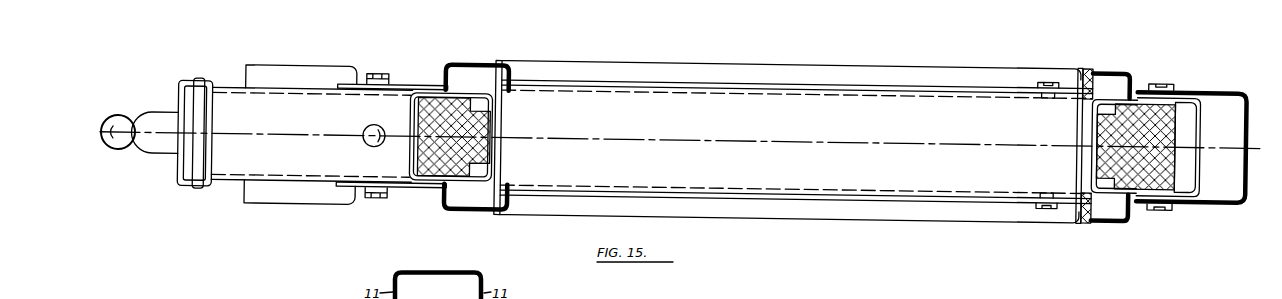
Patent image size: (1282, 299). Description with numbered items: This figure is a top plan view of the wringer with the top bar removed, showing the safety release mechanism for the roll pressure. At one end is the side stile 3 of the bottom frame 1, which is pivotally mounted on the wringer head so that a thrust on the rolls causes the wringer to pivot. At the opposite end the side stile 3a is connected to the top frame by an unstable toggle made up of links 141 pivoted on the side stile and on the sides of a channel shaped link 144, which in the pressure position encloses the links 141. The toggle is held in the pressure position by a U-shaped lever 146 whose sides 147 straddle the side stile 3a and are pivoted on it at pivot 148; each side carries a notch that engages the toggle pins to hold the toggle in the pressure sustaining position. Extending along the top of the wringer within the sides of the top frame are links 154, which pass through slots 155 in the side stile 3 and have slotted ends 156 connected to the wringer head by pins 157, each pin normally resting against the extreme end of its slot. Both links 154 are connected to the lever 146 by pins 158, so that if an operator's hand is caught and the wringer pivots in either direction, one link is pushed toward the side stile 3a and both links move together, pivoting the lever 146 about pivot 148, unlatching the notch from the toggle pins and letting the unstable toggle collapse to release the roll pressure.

The bottom frame 1 is at (787, 219).
The side stile 3 is at (492, 79).
The side stile 3a is at (1112, 73).
The links 141 is at (1170, 91).
The channel shaped link 144 is at (1229, 91).
The U-shaped lever 146 is at (1193, 140).
The sides 147 is at (1104, 103).
The pivot 148 is at (1088, 73).
The links 154 is at (873, 95).
The slots 155 is at (484, 81).
The slotted ends 156 is at (355, 82).
The pins 157 is at (384, 72).
The pins 158 is at (1050, 99).